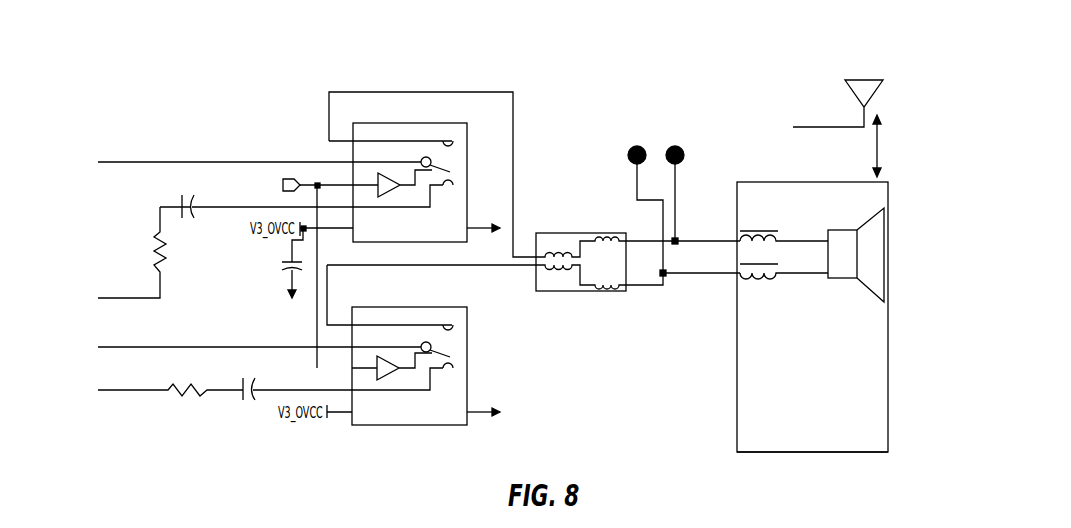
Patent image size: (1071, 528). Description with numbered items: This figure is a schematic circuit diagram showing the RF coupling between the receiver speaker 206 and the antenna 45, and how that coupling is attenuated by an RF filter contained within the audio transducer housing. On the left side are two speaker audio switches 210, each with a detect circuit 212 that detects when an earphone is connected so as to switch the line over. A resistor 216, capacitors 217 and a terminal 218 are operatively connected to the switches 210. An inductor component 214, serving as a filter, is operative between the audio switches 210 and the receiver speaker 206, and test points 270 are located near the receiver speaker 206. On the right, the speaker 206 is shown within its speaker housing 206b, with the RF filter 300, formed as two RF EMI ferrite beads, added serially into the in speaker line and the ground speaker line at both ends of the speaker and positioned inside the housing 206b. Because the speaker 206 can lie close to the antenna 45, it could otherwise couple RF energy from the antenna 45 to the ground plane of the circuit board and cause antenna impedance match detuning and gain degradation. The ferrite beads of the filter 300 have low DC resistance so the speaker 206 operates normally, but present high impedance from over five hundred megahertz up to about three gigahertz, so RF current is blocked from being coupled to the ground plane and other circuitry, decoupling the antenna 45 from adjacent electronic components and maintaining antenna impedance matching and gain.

The antenna 45 is at (860, 79).
The receiver speaker 206 is at (900, 219).
The speaker housing 206b is at (765, 452).
The speaker audio switch 210 is at (433, 123).
The detect circuit 212 is at (390, 182).
The inductor component 214 is at (568, 292).
The resistor 216 is at (163, 250).
The capacitor 217 is at (191, 212).
The terminal 218 is at (290, 178).
The test point 270 is at (675, 145).
The RF filter 300 is at (776, 228).